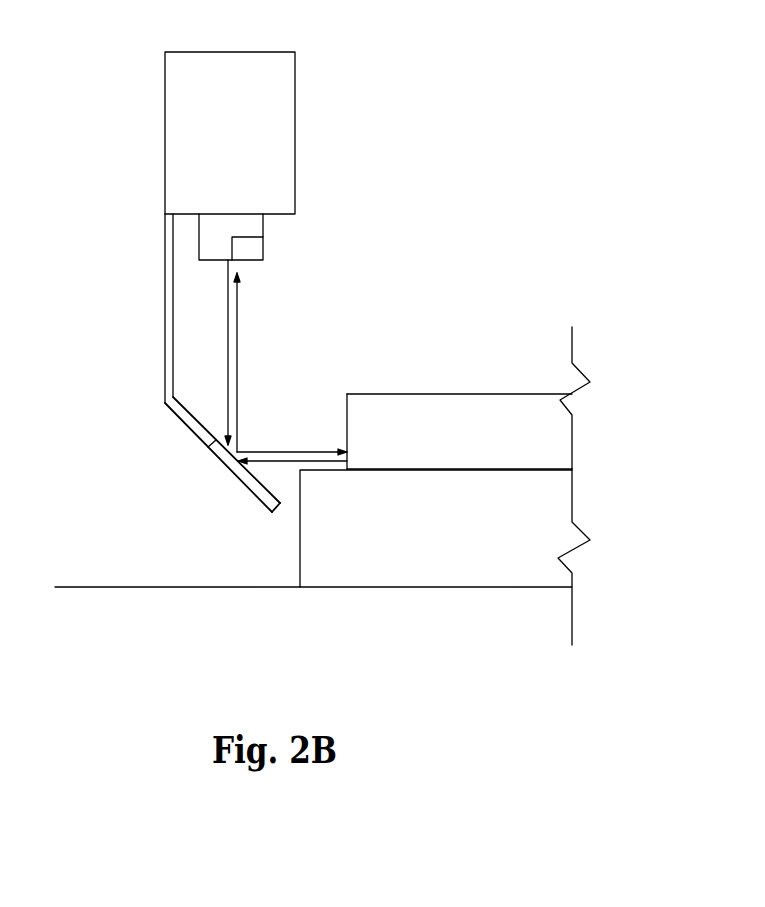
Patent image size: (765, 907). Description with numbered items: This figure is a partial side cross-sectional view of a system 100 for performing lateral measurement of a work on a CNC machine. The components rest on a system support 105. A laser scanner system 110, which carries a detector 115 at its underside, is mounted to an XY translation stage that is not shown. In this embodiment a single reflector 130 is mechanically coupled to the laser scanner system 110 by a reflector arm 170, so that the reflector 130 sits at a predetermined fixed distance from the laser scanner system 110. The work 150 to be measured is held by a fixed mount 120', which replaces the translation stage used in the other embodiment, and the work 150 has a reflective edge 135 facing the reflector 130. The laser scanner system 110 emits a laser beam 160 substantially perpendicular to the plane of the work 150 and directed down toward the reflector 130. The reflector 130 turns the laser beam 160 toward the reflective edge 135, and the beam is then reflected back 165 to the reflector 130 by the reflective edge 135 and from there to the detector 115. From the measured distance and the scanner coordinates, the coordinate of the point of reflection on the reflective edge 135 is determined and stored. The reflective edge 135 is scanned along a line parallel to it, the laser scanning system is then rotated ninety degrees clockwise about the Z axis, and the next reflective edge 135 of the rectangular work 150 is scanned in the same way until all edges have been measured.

The system 100 is at (543, 16).
The system support 105 is at (107, 587).
The laser scanner system 110 is at (295, 87).
The detector 115 is at (260, 248).
The fixed mount 120' is at (445, 558).
The reflector 130 is at (265, 503).
The reflective edge 135 is at (347, 415).
The work 150 is at (460, 400).
The laser beam 160 is at (227, 330).
The reflected back 165 is at (293, 461).
The reflector arm 170 is at (162, 343).